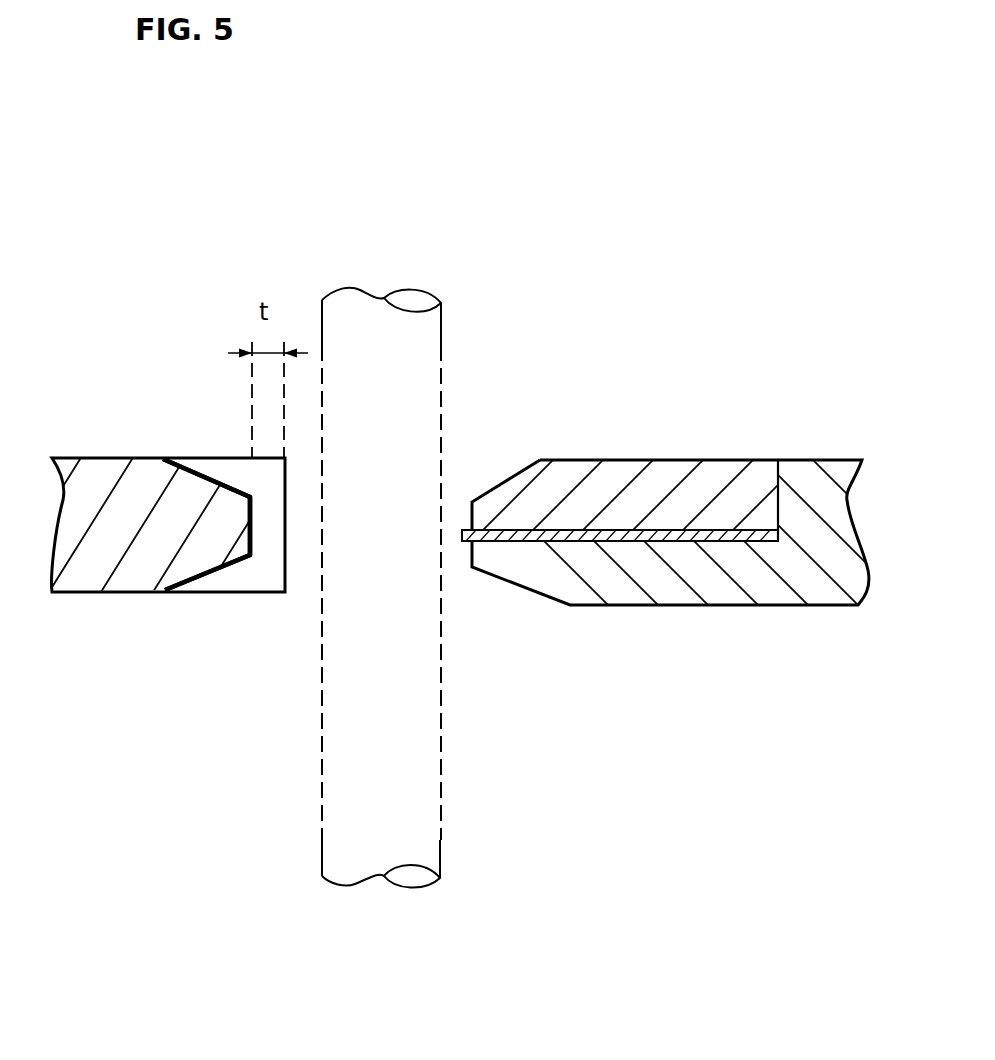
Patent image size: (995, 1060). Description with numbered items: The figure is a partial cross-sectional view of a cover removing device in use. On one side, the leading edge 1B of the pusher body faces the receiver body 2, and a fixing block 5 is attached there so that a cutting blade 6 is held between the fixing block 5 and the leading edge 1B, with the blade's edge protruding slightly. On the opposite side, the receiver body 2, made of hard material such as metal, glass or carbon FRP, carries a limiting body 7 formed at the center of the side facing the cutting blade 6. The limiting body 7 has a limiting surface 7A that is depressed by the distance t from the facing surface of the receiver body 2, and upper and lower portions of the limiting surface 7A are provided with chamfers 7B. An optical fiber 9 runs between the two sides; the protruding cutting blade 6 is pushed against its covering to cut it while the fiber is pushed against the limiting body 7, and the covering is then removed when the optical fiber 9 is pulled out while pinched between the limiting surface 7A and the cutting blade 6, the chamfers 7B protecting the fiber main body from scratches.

The leading edge 1B is at (697, 580).
The receiver body 2 is at (98, 487).
The fixing block 5 is at (655, 485).
The cutting blade 6 is at (462, 543).
The limiting body 7 is at (232, 593).
The limiting surface 7A is at (253, 528).
The chamfers 7B is at (200, 477).
The optical fiber 9 is at (441, 788).